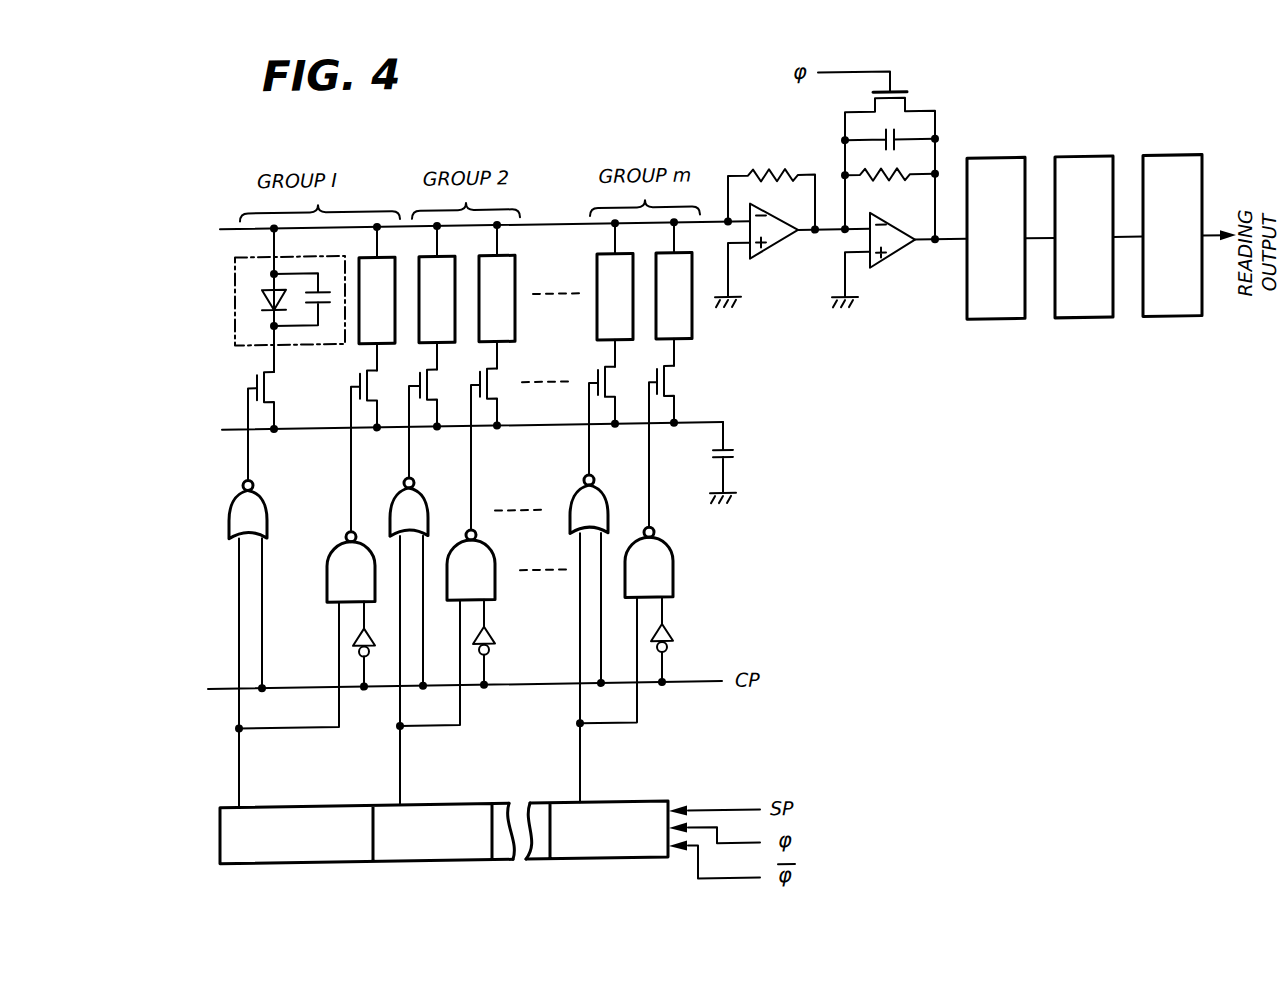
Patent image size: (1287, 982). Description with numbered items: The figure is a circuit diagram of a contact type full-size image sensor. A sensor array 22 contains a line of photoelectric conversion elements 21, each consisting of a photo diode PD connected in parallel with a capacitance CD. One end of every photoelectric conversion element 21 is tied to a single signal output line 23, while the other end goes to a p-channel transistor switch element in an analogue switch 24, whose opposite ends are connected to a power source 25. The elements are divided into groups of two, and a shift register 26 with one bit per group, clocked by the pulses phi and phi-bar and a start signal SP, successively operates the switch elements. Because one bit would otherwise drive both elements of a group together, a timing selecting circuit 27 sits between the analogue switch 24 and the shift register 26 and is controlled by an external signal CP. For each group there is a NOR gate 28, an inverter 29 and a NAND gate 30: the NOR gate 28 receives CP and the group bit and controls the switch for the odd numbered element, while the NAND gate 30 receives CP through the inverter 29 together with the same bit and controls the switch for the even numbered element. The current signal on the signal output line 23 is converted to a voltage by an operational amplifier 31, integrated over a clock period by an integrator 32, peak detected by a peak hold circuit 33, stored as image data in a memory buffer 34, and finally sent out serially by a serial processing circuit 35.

The photoelectric conversion elements 21 is at (516, 262).
The sensor array 22 is at (226, 308).
The signal output line 23 is at (550, 228).
The analogue switch 24 is at (232, 400).
The power source 25 is at (740, 462).
The shift register 26 is at (308, 865).
The timing selecting circuit 27 is at (218, 578).
The NOR gate 28 is at (268, 507).
The inverter 29 is at (353, 640).
The NAND gate 30 is at (326, 582).
The operational amplifier 31 is at (773, 253).
The integrator 32 is at (898, 262).
The peak hold circuit 33 is at (987, 169).
The memory buffer 34 is at (1080, 169).
The serial processing circuit 35 is at (1170, 169).